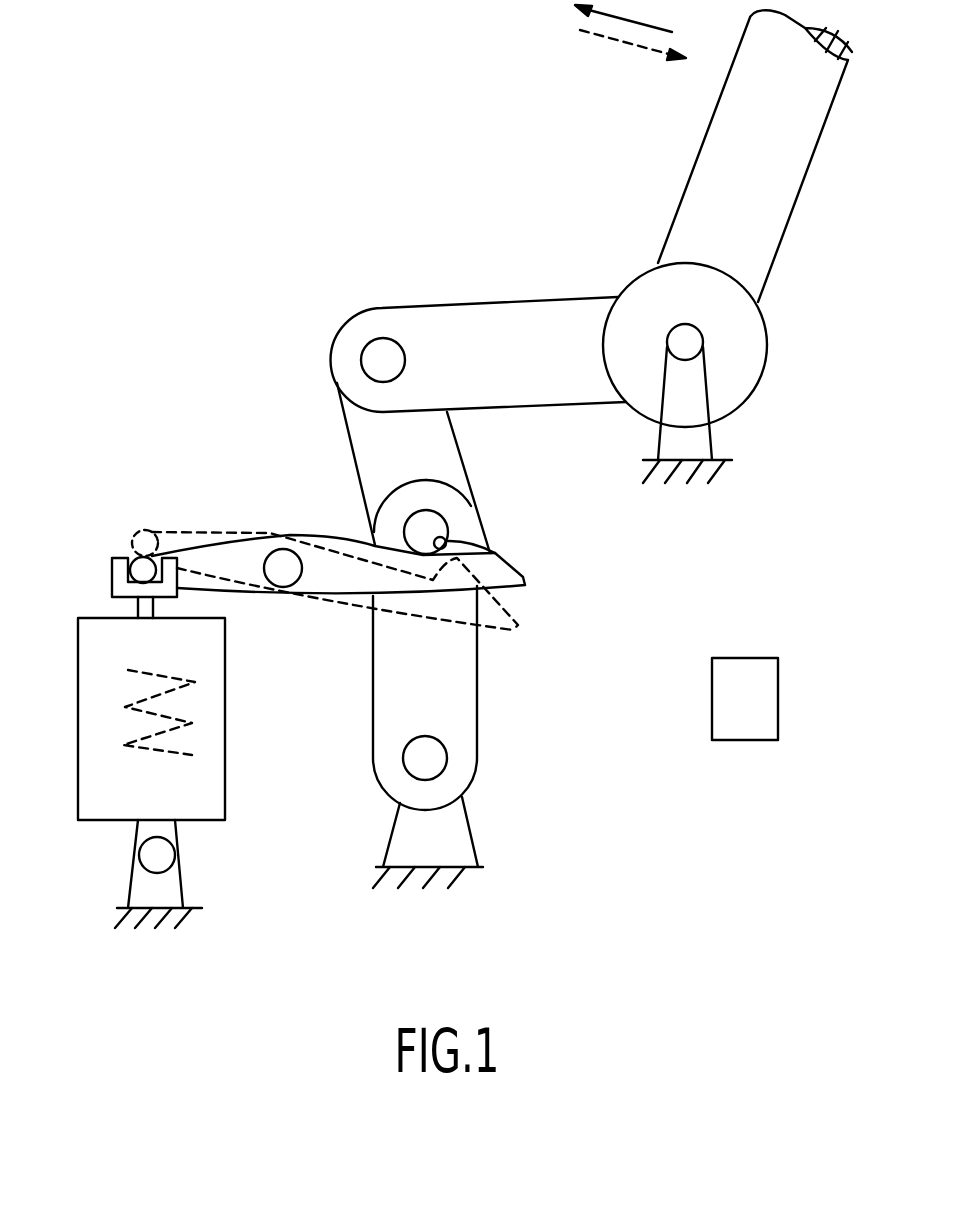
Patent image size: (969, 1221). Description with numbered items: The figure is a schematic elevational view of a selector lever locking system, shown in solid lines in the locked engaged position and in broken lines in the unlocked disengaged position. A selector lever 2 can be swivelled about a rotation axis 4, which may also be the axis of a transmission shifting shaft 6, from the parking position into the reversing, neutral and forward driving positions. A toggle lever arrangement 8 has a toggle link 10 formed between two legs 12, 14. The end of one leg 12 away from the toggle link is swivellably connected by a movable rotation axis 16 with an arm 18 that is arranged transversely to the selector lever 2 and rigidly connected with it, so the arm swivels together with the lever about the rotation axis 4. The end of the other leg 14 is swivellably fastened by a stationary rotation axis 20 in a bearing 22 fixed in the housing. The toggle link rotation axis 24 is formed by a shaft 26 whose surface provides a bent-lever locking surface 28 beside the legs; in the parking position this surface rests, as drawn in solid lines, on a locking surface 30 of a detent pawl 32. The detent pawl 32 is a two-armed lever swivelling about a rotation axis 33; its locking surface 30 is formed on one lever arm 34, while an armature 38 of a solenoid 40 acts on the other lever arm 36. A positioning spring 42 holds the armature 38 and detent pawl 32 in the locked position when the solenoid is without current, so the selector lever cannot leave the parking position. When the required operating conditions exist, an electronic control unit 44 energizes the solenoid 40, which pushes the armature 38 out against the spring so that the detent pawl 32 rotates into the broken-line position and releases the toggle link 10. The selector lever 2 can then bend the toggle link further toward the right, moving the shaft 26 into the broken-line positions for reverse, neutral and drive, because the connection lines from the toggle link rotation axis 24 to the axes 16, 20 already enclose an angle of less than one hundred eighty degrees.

The selector lever 2 is at (717, 152).
The rotation axis 4 is at (690, 338).
The transmission shifting shaft 6 is at (765, 377).
The toggle lever arrangement 8 is at (362, 222).
The toggle link 10 is at (477, 523).
The leg 12 is at (348, 440).
The leg 14 is at (373, 658).
The movable rotation axis 16 is at (375, 352).
The arm 18 is at (510, 302).
The stationary rotation axis 20 is at (413, 752).
The bearing 22 is at (390, 830).
The toggle link rotation axis 24 is at (428, 528).
The shaft 26 is at (468, 490).
The bent-lever locking surface 28 is at (417, 510).
The locking surface 30 is at (455, 524).
The detent pawl 32 is at (250, 548).
The rotation axis 33 is at (283, 583).
The lever arm 34 is at (332, 540).
The lever arm 36 is at (182, 547).
The armature 38 is at (138, 612).
The solenoid 40 is at (225, 703).
The positioning spring 42 is at (192, 755).
The electronic control unit 44 is at (778, 695).